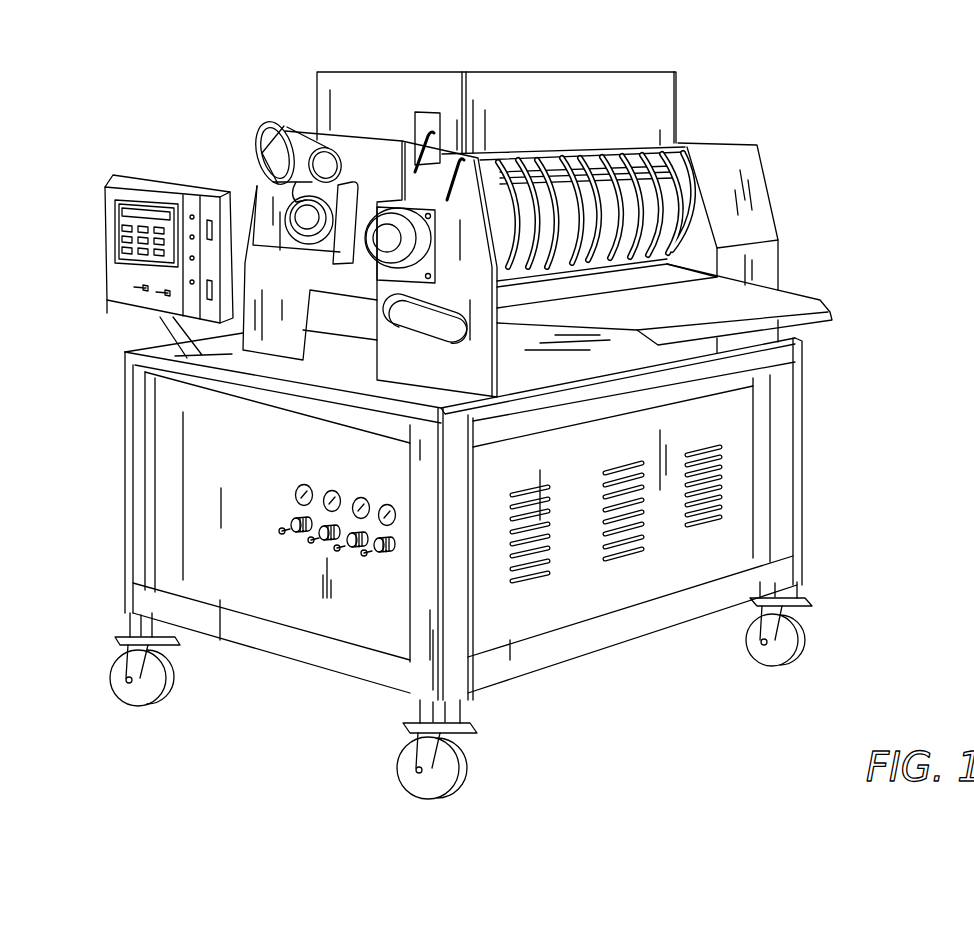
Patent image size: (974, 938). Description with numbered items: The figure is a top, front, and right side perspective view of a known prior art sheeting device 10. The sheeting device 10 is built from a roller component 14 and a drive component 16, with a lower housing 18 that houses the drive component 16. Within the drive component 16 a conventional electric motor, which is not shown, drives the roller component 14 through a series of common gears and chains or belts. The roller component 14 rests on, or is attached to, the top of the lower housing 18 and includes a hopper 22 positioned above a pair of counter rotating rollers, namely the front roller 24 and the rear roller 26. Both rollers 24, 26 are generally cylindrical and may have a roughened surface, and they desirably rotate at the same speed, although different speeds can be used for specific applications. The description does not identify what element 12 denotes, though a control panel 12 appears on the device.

The sheeting device 10 is at (271, 746).
The control panel 12 is at (152, 150).
The roller component 14 is at (701, 47).
The drive component 16 is at (826, 505).
The lower housing 18 is at (630, 630).
The hopper 22 is at (567, 90).
The front roller 24 is at (667, 203).
The rear roller 26 is at (391, 203).